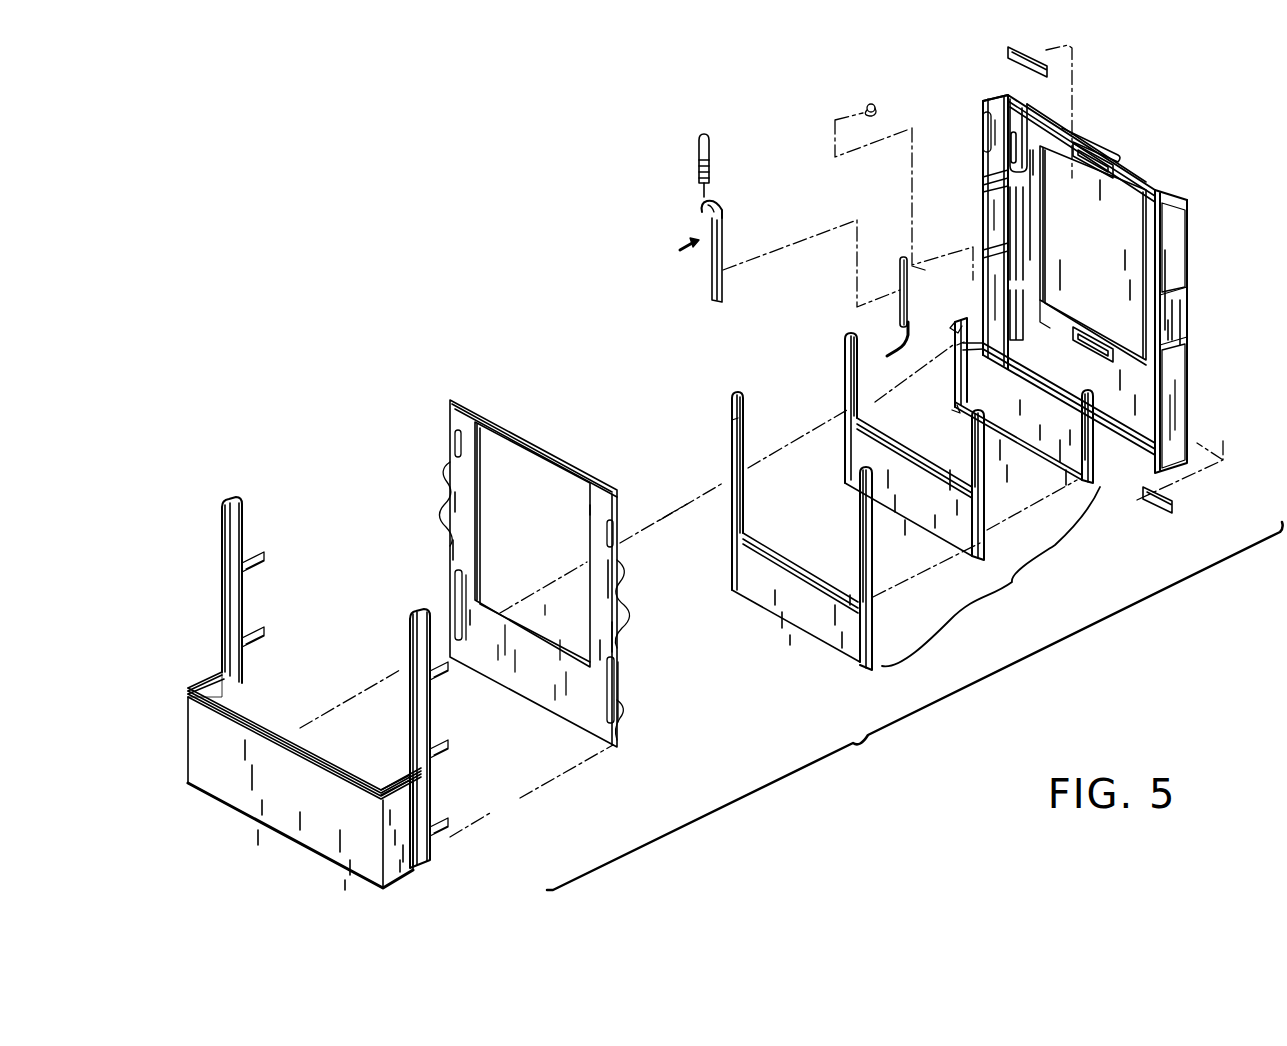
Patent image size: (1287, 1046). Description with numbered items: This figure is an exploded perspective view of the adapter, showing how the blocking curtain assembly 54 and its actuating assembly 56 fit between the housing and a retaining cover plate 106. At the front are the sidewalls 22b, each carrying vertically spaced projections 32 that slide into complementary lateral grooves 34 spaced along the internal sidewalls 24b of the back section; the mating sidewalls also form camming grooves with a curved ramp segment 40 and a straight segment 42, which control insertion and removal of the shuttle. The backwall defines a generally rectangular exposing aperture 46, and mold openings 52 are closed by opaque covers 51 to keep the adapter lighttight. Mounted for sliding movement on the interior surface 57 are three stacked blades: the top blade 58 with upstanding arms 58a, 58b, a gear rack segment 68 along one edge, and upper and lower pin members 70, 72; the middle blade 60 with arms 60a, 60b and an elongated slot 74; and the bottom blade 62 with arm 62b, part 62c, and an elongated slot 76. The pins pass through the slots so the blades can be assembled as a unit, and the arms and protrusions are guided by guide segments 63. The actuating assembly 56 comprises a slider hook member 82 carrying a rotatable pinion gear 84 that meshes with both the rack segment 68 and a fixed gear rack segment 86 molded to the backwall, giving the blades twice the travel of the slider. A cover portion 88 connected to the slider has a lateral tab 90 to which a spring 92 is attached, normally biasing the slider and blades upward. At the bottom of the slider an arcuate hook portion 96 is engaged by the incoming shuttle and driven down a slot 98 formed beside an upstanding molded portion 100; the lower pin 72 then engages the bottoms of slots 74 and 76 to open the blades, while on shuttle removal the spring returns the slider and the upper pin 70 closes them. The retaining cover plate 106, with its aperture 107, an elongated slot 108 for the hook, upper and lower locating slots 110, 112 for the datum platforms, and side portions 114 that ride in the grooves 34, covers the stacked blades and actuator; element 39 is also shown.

The sidewall 22b is at (222, 674).
The projection 32 is at (256, 568).
The retaining cover plate 106 is at (580, 472).
The aperture 107 is at (552, 465).
The elongated slot 108 is at (534, 689).
The upper locating slot 110 is at (453, 443).
The lower locating slot 112 is at (455, 600).
The side portion 114 is at (448, 470).
The bottom blade 62 is at (780, 636).
The upstanding arm 62b is at (860, 517).
The left leg 62c is at (744, 420).
The elongated slot 76 is at (734, 426).
The middle blade 60 is at (952, 526).
The upstanding arm 60a is at (858, 376).
The upstanding arm 60b is at (968, 461).
The elongated slot 74 is at (846, 370).
The lower pin member 72 is at (952, 410).
The top blade 58 is at (1050, 452).
The upstanding arm 58a is at (960, 368).
The upstanding arm 58b is at (1088, 406).
The gear rack segment 68 is at (957, 345).
The upper pin member 70 is at (957, 327).
The hook portion 96 is at (898, 336).
The slider hook member 82 is at (903, 258).
The pinion gear 84 is at (886, 91).
The spring 92 is at (712, 144).
The lateral tab 90 is at (718, 205).
The cover portion 88 is at (722, 232).
The actuating assembly 56 is at (686, 247).
The internal sidewall 24b is at (982, 222).
The lateral groove 34 is at (986, 190).
The curved ramp segment 40 is at (986, 100).
The straight segment 42 is at (983, 125).
The guide segment 63 is at (1030, 110).
The fixed gear rack segment 86 is at (1023, 222).
The slot 98 is at (1023, 278).
The interior surface 57 is at (1052, 320).
The exposing aperture 46 is at (1126, 195).
The mold opening 52 is at (1110, 152).
The upstanding molded portion 100 is at (1033, 348).
The side wall 39 is at (1187, 360).
The opaque cover 51 is at (1008, 52).
The blocking curtain assembly 54 is at (915, 688).